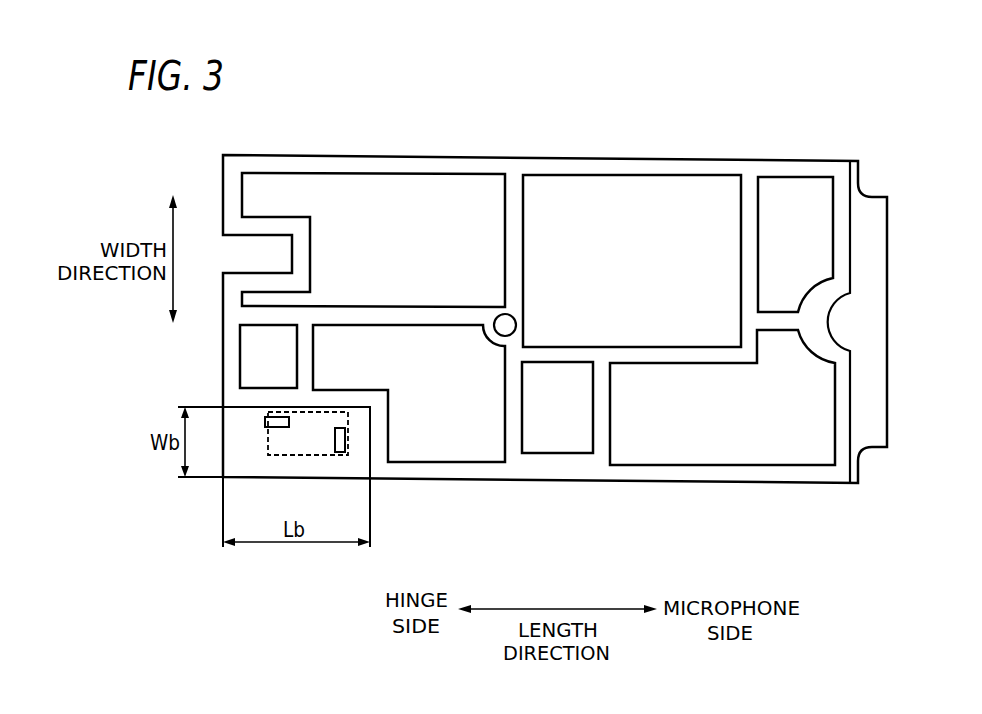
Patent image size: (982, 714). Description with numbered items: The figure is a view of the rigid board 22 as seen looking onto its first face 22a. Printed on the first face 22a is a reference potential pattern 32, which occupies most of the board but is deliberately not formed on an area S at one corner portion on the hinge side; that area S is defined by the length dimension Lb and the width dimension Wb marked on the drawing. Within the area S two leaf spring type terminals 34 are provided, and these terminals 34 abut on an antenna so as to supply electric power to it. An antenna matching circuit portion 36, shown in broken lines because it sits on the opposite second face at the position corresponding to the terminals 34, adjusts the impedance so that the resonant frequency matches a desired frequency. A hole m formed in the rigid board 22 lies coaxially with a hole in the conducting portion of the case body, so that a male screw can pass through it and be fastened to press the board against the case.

The rigid board 22 is at (887, 243).
The first face 22a is at (641, 238).
The reference potential pattern 32 is at (517, 465).
The leaf spring type terminal 34 is at (278, 427).
The antenna matching circuit portion 36 is at (320, 455).
The hole m is at (514, 328).
The area S is at (245, 418).